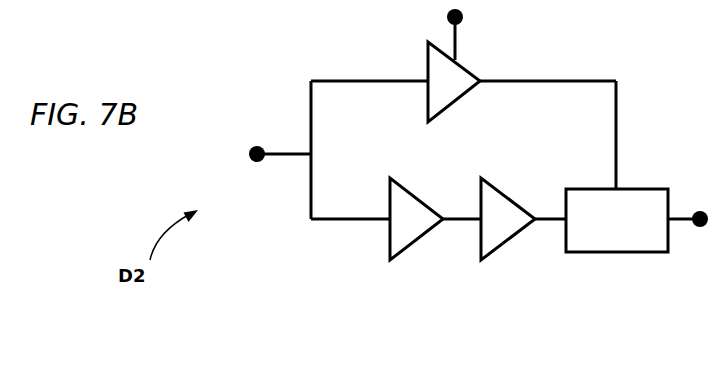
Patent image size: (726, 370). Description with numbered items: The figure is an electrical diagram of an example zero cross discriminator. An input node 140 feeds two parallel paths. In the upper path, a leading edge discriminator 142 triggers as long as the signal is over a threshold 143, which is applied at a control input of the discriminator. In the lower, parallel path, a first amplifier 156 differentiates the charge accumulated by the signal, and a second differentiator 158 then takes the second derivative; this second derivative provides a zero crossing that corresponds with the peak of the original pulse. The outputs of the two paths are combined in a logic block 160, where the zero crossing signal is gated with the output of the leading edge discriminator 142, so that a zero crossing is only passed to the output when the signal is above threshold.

The input terminal 140 is at (255, 146).
The leading edge discriminator 142 is at (466, 94).
The threshold 143 is at (462, 20).
The first amplifier 156 is at (406, 247).
The second differentiator 158 is at (516, 236).
The logic block 160 is at (640, 187).